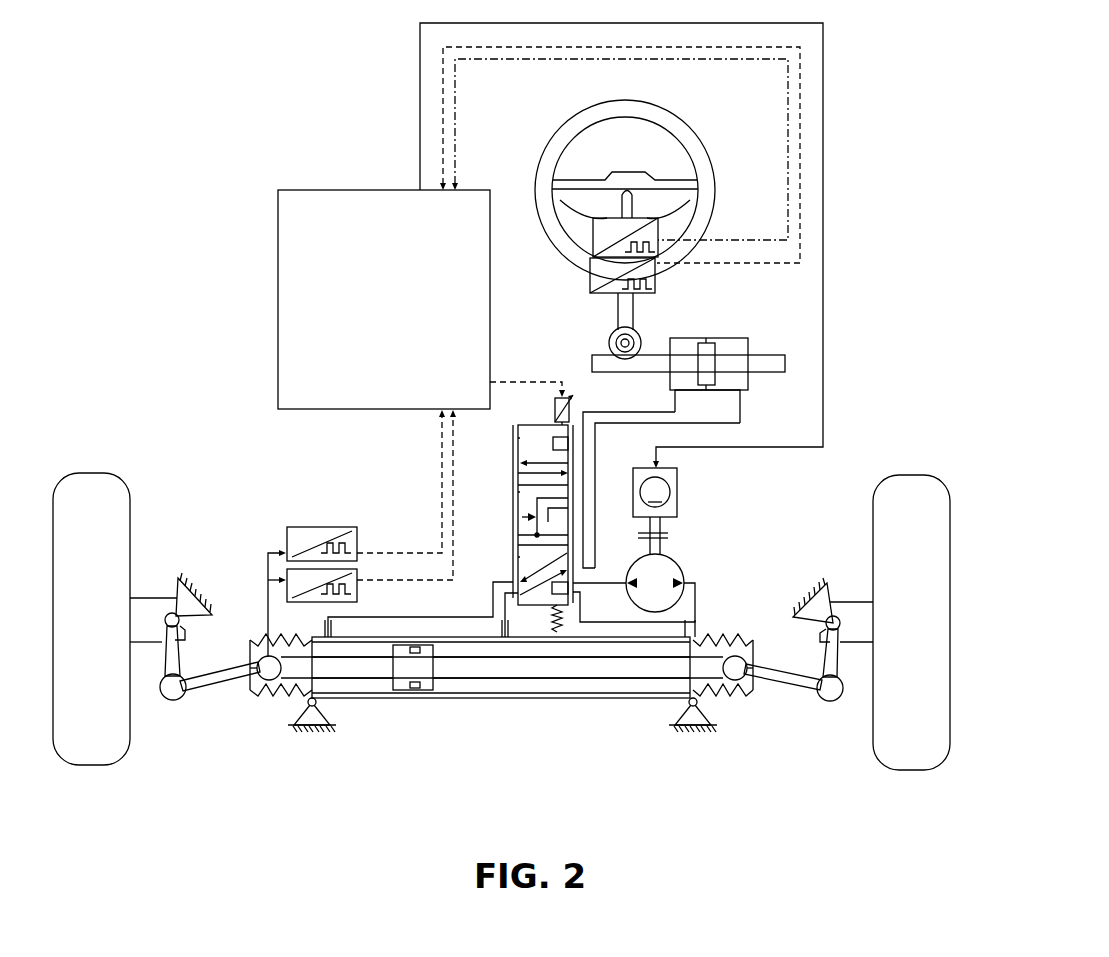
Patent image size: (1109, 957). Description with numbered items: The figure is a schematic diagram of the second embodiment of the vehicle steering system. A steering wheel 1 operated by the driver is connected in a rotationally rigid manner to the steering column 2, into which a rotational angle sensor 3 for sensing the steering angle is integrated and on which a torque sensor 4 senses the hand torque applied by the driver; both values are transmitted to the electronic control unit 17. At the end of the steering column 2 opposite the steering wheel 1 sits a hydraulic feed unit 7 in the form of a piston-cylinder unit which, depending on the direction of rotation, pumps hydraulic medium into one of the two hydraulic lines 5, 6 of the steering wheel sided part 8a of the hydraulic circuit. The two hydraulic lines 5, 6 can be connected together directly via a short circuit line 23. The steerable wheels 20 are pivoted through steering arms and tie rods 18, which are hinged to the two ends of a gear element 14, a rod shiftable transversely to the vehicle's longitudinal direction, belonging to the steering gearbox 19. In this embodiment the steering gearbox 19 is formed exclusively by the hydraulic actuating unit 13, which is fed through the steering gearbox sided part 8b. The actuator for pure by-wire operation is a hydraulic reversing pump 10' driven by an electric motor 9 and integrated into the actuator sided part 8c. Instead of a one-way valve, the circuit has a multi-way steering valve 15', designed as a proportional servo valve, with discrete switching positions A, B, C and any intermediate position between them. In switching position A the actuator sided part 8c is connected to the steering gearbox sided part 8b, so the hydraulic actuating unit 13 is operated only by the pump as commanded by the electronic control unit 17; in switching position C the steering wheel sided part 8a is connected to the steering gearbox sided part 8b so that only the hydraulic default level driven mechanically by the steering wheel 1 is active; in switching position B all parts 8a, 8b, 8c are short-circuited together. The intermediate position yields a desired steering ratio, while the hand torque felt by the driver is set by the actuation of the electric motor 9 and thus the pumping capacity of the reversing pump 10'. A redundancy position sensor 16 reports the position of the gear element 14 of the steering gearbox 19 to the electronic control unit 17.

The steering wheel 1 is at (686, 130).
The steering column 2 is at (622, 192).
The rotational angle sensor 3 is at (593, 240).
The torque sensor 4 is at (590, 270).
The hydraulic line 5 is at (612, 412).
The hydraulic line 6 is at (628, 423).
The hydraulic feed unit 7 is at (670, 352).
The steering wheel sided part 8a is at (742, 400).
The steering gearbox sided part 8b is at (393, 632).
The actuator sided part 8c is at (695, 607).
The electric motor 9 is at (677, 508).
The hydraulic reversing pump 10' is at (681, 570).
The hydraulic actuating unit 13 is at (452, 690).
The steering gearbox 19 is at (502, 691).
The gear element 14 is at (594, 678).
The multi-way steering valve 15' is at (486, 513).
The redundancy position sensor 16 is at (312, 527).
The electronic control unit 17 is at (550, 301).
The tie rod 18 is at (212, 688).
The steerable wheel 20 is at (120, 750).
The short circuit line 23 is at (522, 517).
The switching position A is at (520, 438).
The switching position B is at (520, 492).
The switching position C is at (520, 557).